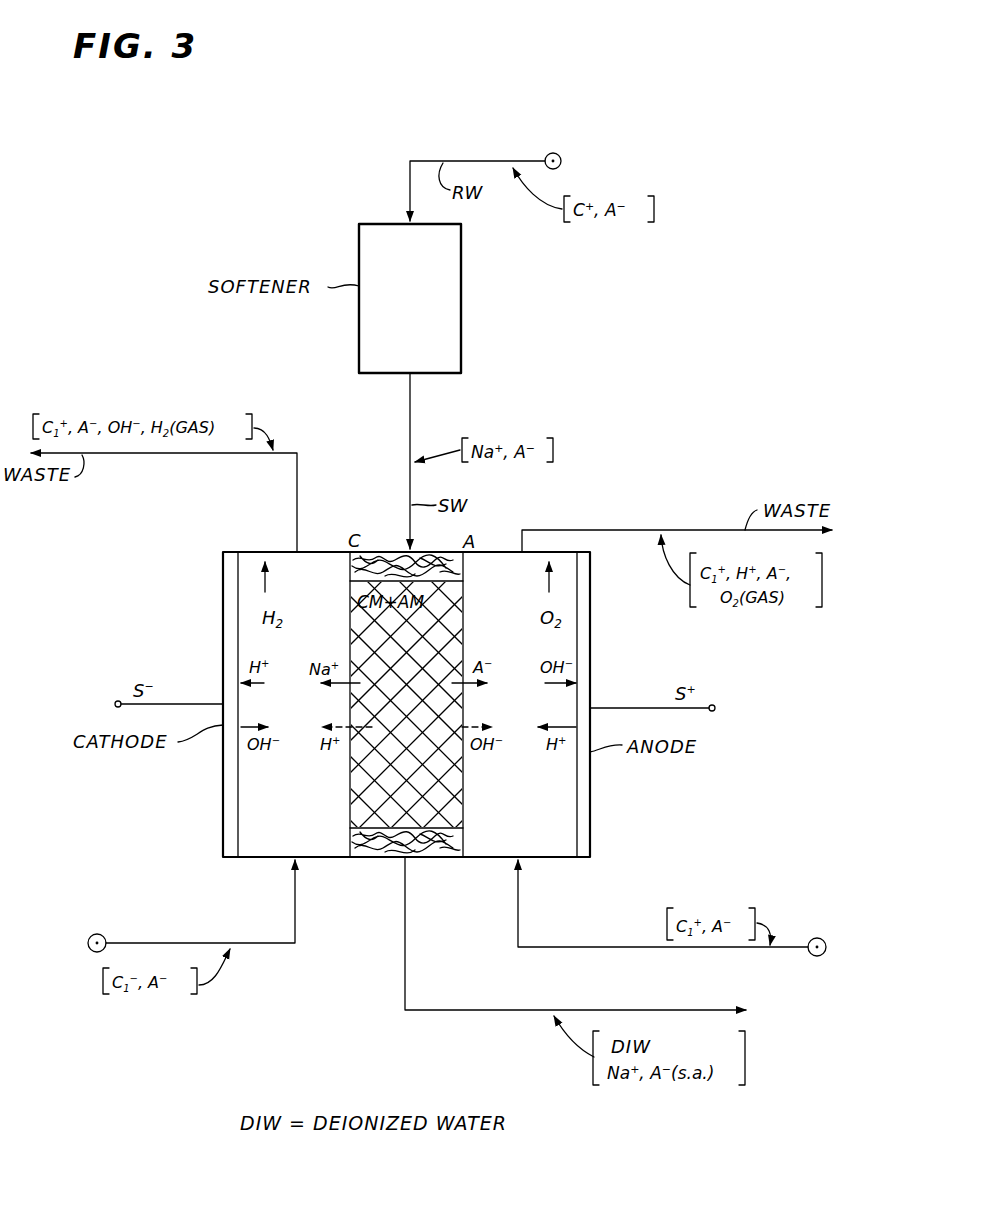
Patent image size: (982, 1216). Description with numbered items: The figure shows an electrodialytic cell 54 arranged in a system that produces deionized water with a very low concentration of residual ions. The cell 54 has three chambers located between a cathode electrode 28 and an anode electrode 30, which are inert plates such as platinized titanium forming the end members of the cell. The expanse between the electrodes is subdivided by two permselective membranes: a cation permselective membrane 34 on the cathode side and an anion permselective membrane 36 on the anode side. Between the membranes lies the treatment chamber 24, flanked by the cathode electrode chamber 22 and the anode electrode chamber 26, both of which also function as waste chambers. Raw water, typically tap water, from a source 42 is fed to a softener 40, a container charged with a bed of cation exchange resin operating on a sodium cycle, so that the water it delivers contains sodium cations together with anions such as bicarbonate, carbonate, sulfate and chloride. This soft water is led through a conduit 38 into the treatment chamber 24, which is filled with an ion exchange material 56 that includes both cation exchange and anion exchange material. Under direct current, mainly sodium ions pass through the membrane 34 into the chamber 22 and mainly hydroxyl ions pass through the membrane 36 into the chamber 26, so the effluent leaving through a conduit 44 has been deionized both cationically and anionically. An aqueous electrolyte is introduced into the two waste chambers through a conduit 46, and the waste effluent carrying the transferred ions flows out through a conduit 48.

The cathode electrode chamber 22 is at (270, 847).
The treatment chamber 24 is at (421, 858).
The anode electrode chamber 26 is at (538, 852).
The cathode electrode 28 is at (222, 845).
The anode electrode 30 is at (589, 853).
The cation permselective membrane 34 is at (350, 809).
The anion permselective membrane 36 is at (463, 622).
The conduit 38 is at (410, 412).
The softener 40 is at (461, 255).
The source 42 is at (557, 152).
The conduit 44 is at (480, 1009).
The conduit 46 is at (278, 944).
The conduit 48 is at (297, 497).
The cell 54 is at (377, 871).
The ion exchange material 56 is at (447, 797).